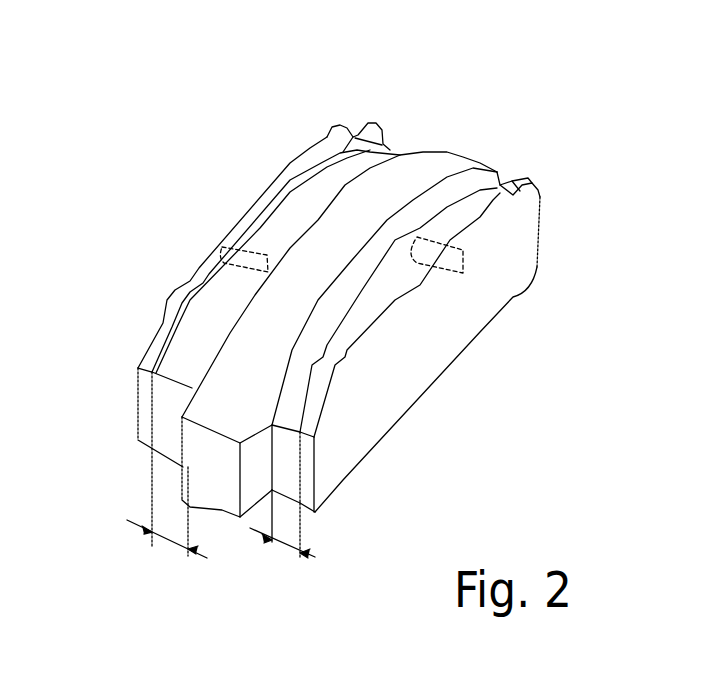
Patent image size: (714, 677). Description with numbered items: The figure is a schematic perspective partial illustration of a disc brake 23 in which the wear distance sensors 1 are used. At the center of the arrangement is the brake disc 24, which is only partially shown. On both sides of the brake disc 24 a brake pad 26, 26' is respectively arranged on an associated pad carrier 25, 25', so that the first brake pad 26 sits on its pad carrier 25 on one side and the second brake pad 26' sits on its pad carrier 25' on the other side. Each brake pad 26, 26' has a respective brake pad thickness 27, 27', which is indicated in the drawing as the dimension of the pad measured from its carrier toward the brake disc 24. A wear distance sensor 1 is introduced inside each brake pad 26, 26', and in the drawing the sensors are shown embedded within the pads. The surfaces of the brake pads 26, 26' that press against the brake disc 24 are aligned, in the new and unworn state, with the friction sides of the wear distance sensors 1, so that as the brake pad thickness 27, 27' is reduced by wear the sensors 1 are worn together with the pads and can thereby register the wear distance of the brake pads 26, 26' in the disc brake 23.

The wear distance sensor 1 is at (247, 257).
The disc brake 23 is at (261, 145).
The brake disc 24 is at (430, 170).
The pad carrier 25 is at (197, 308).
The pad carrier 25' is at (398, 349).
The brake pad 26 is at (216, 283).
The brake pad 26' is at (488, 352).
The brake pad thickness 27 is at (167, 538).
The brake pad thickness 27' is at (283, 557).